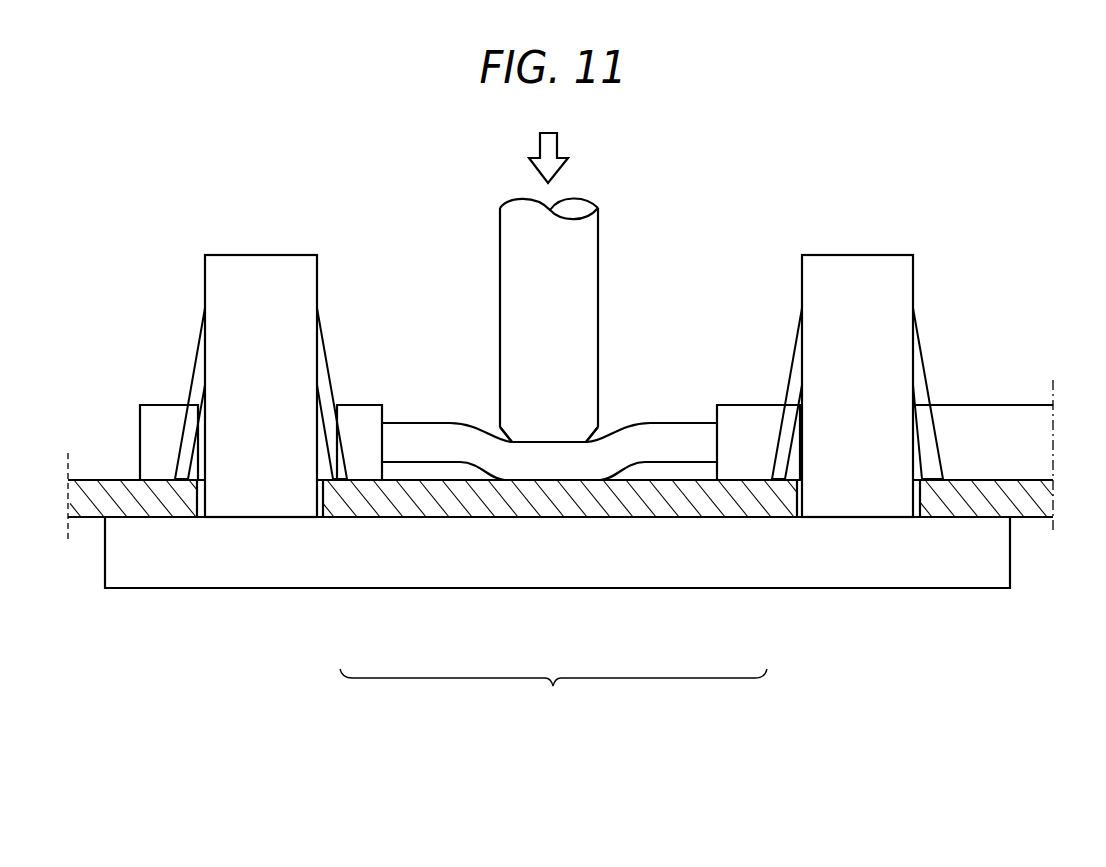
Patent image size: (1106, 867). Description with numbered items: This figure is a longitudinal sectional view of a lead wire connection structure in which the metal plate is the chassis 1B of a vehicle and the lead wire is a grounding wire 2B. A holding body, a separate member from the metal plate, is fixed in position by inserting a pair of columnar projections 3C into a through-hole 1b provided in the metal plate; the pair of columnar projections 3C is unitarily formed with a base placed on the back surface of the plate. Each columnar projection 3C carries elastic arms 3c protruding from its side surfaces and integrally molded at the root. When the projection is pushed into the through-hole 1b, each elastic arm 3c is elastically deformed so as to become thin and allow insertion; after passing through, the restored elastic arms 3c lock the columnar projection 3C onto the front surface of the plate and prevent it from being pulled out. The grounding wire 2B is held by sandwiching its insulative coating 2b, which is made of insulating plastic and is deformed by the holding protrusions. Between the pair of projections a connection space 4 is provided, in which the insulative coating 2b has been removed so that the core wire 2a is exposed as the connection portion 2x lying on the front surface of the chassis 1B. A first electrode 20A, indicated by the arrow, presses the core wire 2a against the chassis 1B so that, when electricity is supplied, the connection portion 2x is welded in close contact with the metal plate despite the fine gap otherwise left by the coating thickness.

The chassis 1B is at (643, 503).
The through-hole 1b is at (198, 465).
The core wire 2a is at (538, 465).
The insulative coating 2b is at (363, 460).
The grounding wire 2B is at (553, 694).
The connection portion 2x is at (573, 432).
The columnar projection 3C is at (262, 288).
The elastic arm 3c is at (195, 387).
The connection space 4 is at (448, 362).
The first electrode 20A is at (568, 280).